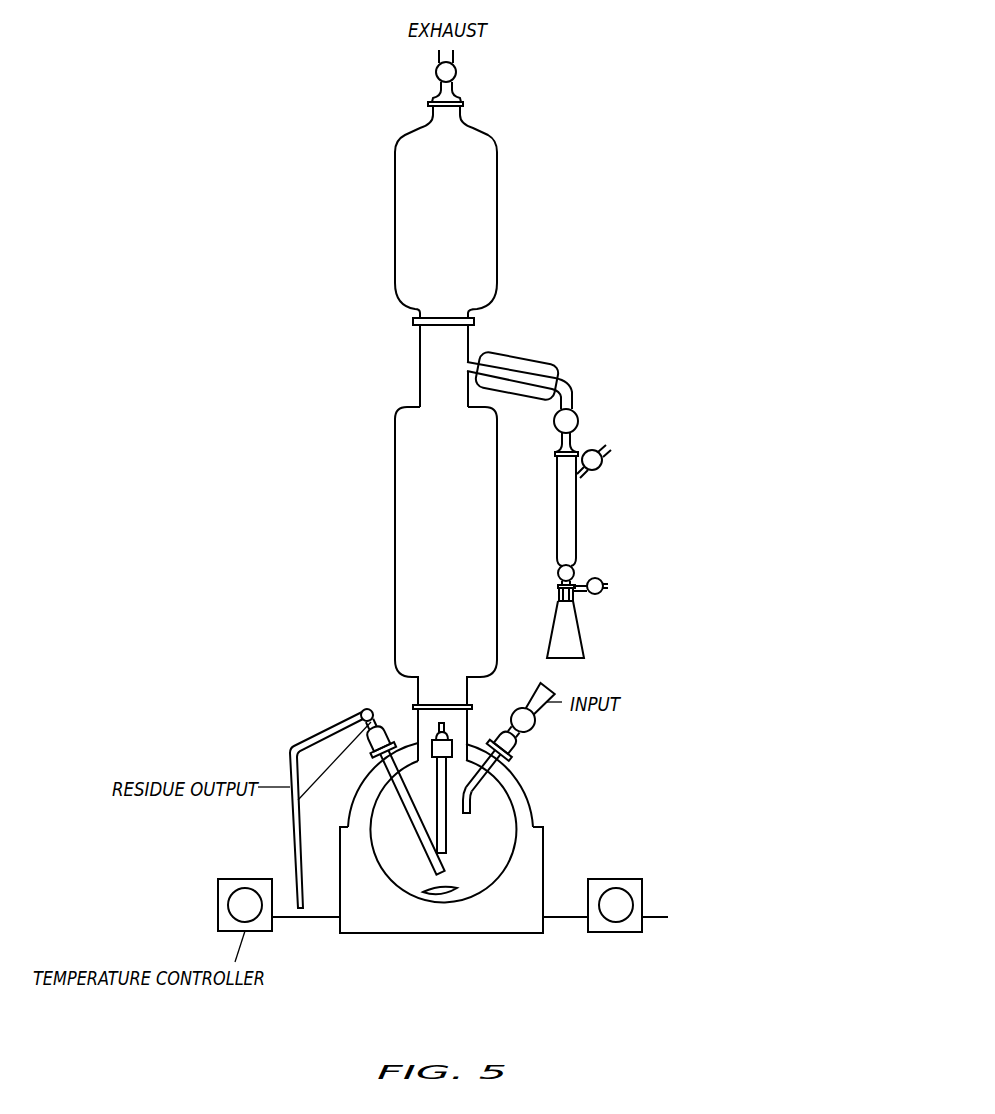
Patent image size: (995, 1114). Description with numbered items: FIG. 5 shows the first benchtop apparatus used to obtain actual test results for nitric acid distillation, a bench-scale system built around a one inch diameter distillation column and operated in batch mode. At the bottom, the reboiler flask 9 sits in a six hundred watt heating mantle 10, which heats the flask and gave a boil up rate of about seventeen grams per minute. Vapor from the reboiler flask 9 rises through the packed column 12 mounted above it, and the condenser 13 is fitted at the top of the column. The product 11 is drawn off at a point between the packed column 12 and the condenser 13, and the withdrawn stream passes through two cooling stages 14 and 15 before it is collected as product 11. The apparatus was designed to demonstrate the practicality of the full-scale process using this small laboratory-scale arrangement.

The reboiler flask 9 is at (492, 810).
The heating mantle 10 is at (437, 915).
The product 11 is at (570, 637).
The packed column 12 is at (408, 551).
The condenser 13 is at (483, 211).
The cooling stage 14 is at (535, 366).
The cooling stage 15 is at (572, 493).